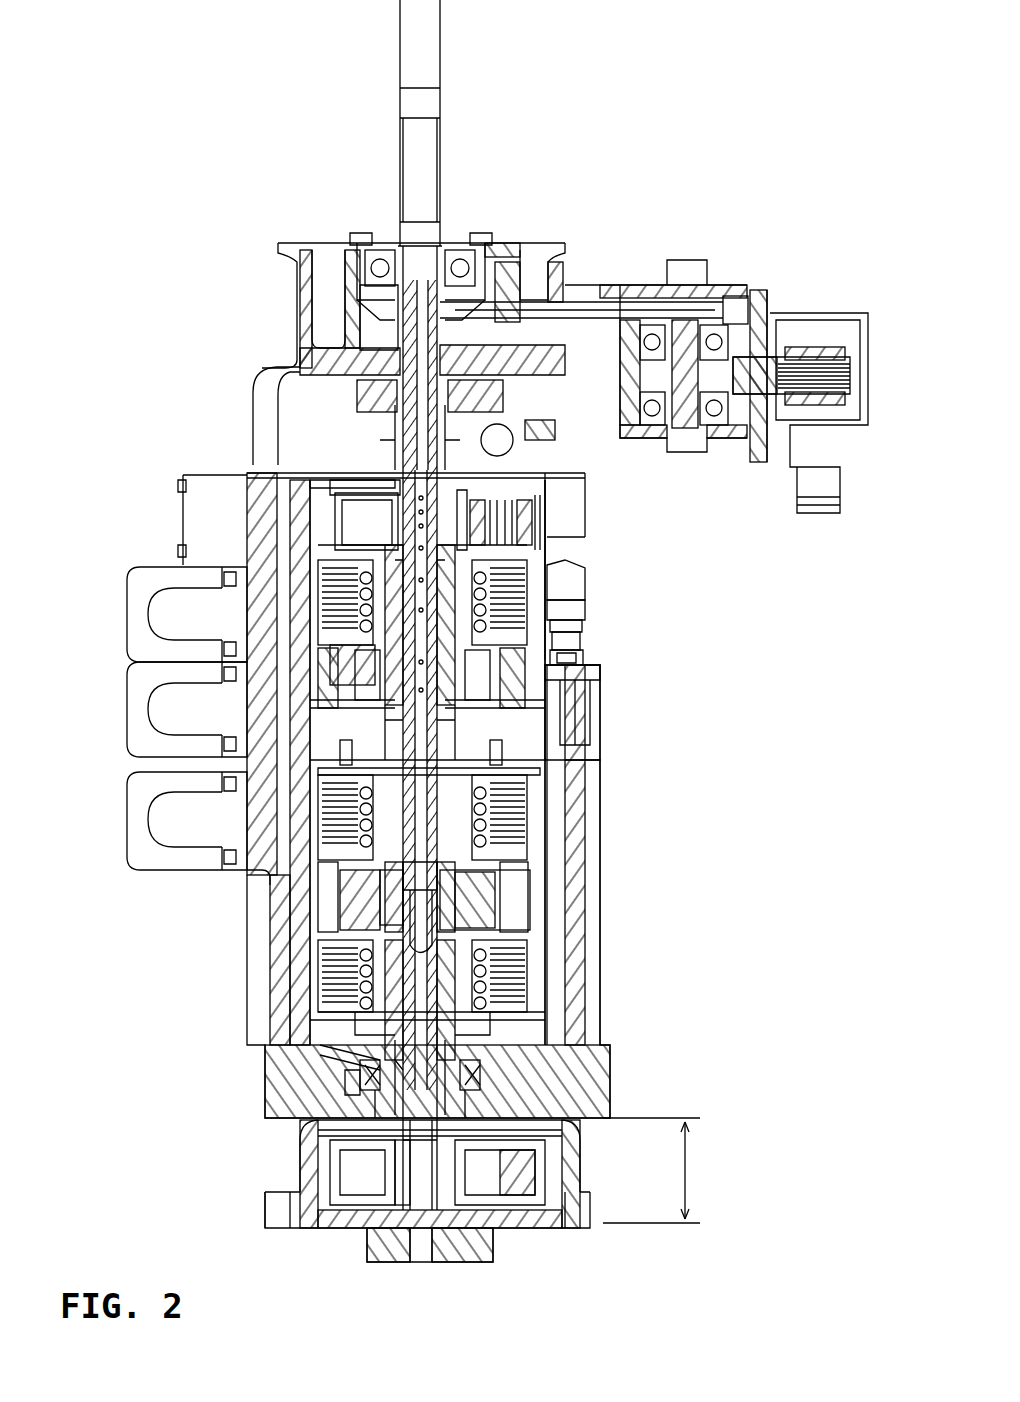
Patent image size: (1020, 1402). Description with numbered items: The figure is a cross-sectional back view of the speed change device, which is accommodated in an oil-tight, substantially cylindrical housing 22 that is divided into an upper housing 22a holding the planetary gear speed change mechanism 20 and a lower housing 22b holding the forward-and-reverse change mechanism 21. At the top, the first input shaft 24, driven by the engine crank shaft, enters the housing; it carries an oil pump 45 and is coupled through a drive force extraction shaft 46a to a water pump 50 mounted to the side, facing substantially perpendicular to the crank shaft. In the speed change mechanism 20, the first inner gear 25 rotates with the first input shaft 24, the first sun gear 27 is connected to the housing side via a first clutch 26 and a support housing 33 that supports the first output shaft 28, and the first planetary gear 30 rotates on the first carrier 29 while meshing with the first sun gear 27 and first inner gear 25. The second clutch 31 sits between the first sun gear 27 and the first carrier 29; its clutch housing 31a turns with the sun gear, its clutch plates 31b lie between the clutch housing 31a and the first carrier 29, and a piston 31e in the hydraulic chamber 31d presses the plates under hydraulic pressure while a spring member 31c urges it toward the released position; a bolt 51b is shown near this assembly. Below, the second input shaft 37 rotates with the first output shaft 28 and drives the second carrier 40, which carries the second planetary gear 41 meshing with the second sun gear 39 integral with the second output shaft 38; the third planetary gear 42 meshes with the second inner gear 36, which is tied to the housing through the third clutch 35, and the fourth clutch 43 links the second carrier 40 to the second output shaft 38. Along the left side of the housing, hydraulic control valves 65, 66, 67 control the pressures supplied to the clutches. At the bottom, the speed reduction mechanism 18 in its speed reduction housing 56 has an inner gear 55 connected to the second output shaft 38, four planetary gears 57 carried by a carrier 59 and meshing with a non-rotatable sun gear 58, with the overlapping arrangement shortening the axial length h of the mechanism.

The planetary gear speed reduction mechanism 18 is at (565, 1178).
The planetary gear speed change mechanism 20 is at (535, 552).
The forward-and-reverse change mechanism 21 is at (540, 900).
The housing 22 is at (750, 748).
The upper housing 22a is at (608, 725).
The lower housing 22b is at (608, 825).
The first input shaft 24 is at (444, 150).
The first inner gear 25 is at (585, 492).
The first clutch 26 is at (575, 688).
The first sun gear 27 is at (385, 524).
The first output shaft 28 is at (395, 525).
The first carrier 29 is at (380, 494).
The first planetary gear 30 is at (522, 508).
The second clutch 31 is at (312, 596).
The clutch housing 31a is at (585, 572).
The clutch plates 31b is at (575, 594).
The spring member 31c is at (345, 650).
The hydraulic chamber 31d is at (572, 634).
The piston 31e is at (582, 616).
The support housing 33 is at (575, 672).
The third clutch 35 is at (530, 822).
The second inner gear 36 is at (560, 860).
The second input shaft 37 is at (390, 725).
The second output shaft 38 is at (470, 1040).
The second sun gear 39 is at (360, 895).
The second carrier 40 is at (345, 878).
The second planetary gear 41 is at (525, 938).
The third planetary gear 42 is at (385, 918).
The fourth clutch 43 is at (538, 988).
The oil pump 45 is at (352, 398).
The drive force extraction shaft 46a is at (598, 300).
The water pump 50 is at (850, 308).
The bolt 51b is at (575, 655).
The inner gear 55 is at (540, 1150).
The speed reduction housing 56 is at (300, 1172).
The planetary gears 57 is at (545, 1196).
The sun gear 58 is at (380, 1195).
The carrier 59 is at (440, 1210).
The hydraulic control valve 65 is at (122, 612).
The hydraulic control valve 66 is at (119, 710).
The hydraulic control valve 67 is at (124, 836).
The length of the speed reduction mechanism h is at (688, 1175).